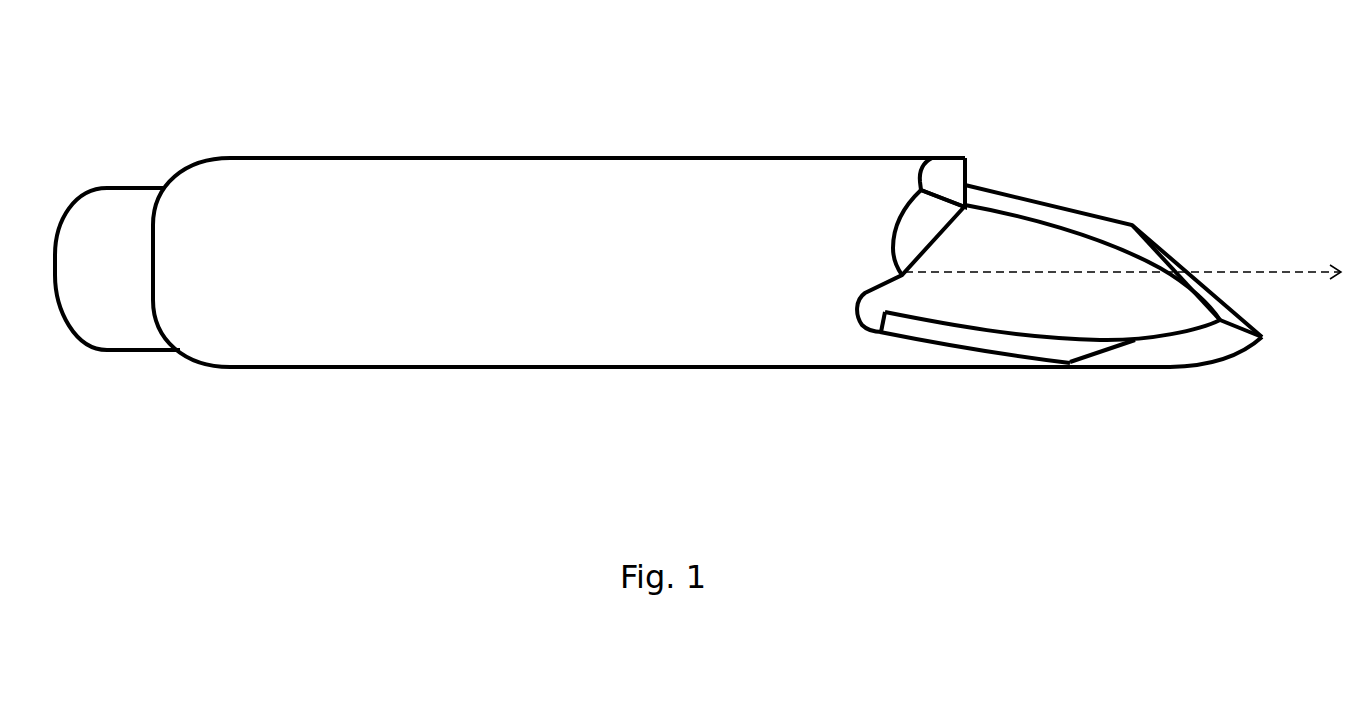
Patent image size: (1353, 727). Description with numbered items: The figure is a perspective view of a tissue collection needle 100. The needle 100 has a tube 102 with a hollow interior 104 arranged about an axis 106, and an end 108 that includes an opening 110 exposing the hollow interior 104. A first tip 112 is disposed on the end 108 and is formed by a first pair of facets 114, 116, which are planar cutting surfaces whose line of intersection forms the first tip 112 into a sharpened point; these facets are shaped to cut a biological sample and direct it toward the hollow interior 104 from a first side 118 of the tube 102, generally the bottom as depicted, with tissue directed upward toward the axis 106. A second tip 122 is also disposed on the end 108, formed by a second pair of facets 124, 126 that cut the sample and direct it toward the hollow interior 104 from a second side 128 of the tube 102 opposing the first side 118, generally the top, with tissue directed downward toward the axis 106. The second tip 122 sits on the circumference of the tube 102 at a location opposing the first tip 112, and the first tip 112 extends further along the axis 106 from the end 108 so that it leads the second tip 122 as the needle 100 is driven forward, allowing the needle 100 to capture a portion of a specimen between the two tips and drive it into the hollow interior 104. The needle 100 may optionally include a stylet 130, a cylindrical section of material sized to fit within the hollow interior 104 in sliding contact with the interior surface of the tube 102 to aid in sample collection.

The needle 100 is at (483, 82).
The tube 102 is at (593, 158).
The hollow interior 104 is at (999, 232).
The axis 106 is at (1258, 268).
The end 108 is at (985, 405).
The opening 110 is at (1041, 252).
The first tip 112 is at (1262, 343).
The first facet 114 is at (1178, 350).
The second facet of first pair 116 is at (1225, 305).
The first side 118 is at (328, 368).
The second tip 122 is at (962, 198).
The first facet of second pair 124 is at (913, 218).
The second facet of second pair 126 is at (948, 180).
The second side 128 is at (297, 158).
The stylet 130 is at (135, 185).